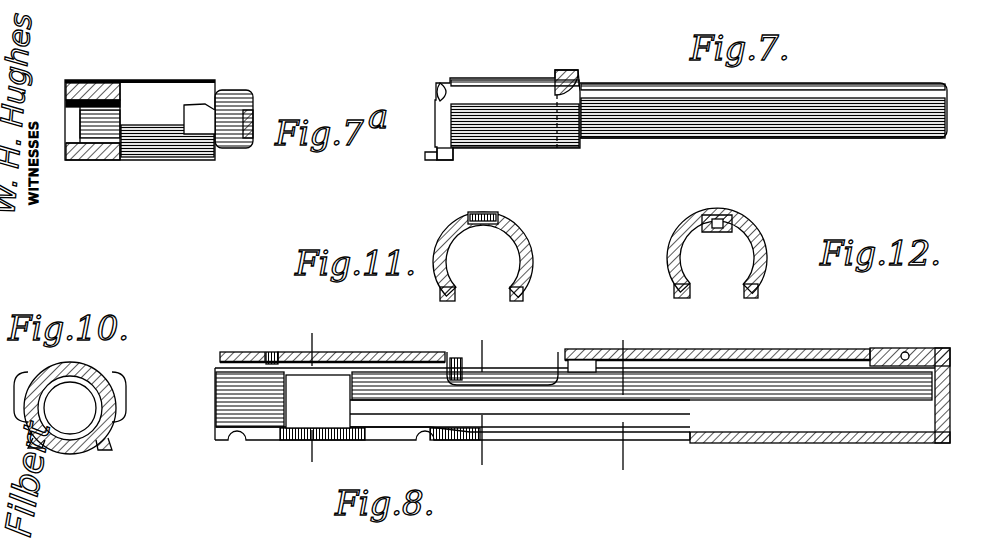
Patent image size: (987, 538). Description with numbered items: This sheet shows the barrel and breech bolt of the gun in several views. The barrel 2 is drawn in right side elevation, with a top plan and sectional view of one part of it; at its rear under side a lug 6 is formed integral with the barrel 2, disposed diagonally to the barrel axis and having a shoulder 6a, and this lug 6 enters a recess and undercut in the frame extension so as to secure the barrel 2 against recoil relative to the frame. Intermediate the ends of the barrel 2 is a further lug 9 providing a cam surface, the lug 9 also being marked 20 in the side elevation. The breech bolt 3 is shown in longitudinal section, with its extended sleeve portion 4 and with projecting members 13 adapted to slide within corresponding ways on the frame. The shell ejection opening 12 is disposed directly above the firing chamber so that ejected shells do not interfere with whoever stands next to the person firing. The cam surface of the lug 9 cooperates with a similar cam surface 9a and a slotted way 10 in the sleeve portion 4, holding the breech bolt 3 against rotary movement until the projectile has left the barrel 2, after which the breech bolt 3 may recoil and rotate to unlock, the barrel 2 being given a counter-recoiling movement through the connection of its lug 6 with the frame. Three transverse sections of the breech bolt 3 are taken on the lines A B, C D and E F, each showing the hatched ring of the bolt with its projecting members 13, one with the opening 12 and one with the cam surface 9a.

In FIG. 7A, the barrel 2 is at (236, 100).
In FIG. 7, the barrel 2 is at (724, 140).
In FIG. 11, the breech bolt 3 is at (528, 254).
In FIG. 10, the breech bolt 3 is at (98, 372).
In FIG. 8, the breech bolt 3 is at (246, 352).
In FIG. 12, the extended sleeve portion 4 is at (672, 250).
In FIG. 8, the extended sleeve portion 4 is at (832, 350).
In FIG. 7, the lug 6 is at (452, 158).
In FIG. 7, the shoulder 6a is at (428, 159).
In FIG. 7A, the lug 9 is at (184, 115).
In FIG. 7, the lug 9 is at (570, 74).
In FIG. 12, the cam surface 9a is at (722, 215).
In FIG. 8, the cam surface 9a is at (582, 360).
In FIG. 8, the slotted way 10 is at (862, 362).
In FIG. 11, the shell ejection opening 12 is at (500, 222).
In FIG. 8, the shell ejection opening 12 is at (497, 372).
In FIG. 11, the projecting members 13 is at (445, 300).
In FIG. 12, the projecting members 13 is at (680, 296).
In FIG. 10, the projecting members 13 is at (104, 450).
In FIG. 8, the projecting members 13 is at (268, 442).
In FIG. 7, the lug 20 is at (444, 86).
In FIG. 8, the section line A B A is at (307, 337).
In FIG. 8, the section line A B is at (308, 456).
In FIG. 8, the section line C D C is at (480, 344).
In FIG. 8, the section line C D is at (481, 449).
In FIG. 8, the section line E F E is at (620, 355).
In FIG. 8, the section line E F is at (619, 459).